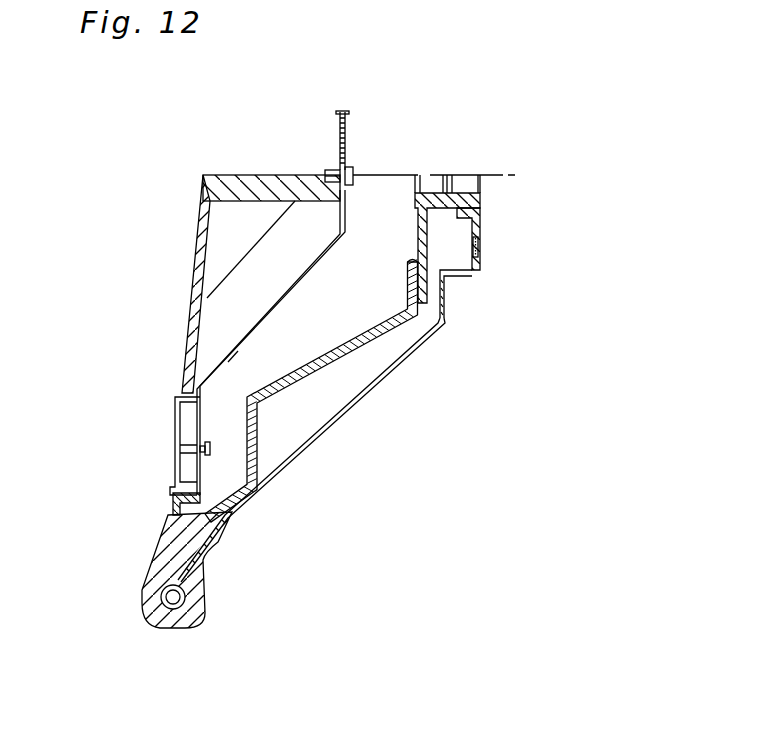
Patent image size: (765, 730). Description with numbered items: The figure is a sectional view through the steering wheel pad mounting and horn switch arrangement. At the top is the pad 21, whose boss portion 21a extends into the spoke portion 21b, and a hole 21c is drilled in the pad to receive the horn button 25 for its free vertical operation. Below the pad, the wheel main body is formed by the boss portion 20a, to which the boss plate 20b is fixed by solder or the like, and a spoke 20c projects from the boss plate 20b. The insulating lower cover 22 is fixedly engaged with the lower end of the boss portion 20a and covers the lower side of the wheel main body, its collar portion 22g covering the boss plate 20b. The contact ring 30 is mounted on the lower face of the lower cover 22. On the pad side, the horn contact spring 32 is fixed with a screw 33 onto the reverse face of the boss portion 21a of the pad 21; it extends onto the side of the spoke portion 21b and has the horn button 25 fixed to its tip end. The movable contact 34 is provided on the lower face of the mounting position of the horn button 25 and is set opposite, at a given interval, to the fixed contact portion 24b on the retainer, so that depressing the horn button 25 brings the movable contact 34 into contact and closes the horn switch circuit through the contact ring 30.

The pad 21 is at (200, 235).
The boss portion 21a is at (271, 185).
The spoke portion 21b is at (190, 310).
The hole 21c is at (170, 483).
The boss portion 20a is at (415, 200).
The boss plate 20b is at (420, 243).
The spoke 20c is at (257, 450).
The lower cover 22 is at (460, 272).
The collar portion 22g is at (477, 225).
The fixed contact portion 24b is at (212, 447).
The horn button 25 is at (175, 465).
The contact ring 30 is at (477, 250).
The horn contact spring 32 is at (232, 357).
The screw 33 is at (353, 172).
The movable contact 34 is at (180, 428).